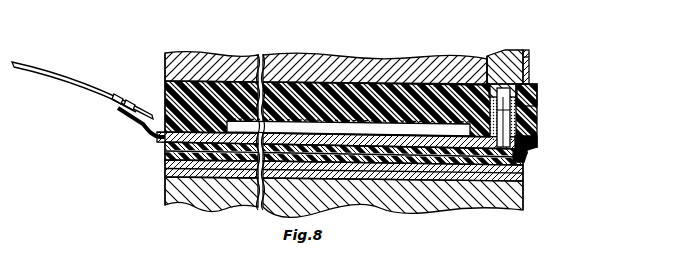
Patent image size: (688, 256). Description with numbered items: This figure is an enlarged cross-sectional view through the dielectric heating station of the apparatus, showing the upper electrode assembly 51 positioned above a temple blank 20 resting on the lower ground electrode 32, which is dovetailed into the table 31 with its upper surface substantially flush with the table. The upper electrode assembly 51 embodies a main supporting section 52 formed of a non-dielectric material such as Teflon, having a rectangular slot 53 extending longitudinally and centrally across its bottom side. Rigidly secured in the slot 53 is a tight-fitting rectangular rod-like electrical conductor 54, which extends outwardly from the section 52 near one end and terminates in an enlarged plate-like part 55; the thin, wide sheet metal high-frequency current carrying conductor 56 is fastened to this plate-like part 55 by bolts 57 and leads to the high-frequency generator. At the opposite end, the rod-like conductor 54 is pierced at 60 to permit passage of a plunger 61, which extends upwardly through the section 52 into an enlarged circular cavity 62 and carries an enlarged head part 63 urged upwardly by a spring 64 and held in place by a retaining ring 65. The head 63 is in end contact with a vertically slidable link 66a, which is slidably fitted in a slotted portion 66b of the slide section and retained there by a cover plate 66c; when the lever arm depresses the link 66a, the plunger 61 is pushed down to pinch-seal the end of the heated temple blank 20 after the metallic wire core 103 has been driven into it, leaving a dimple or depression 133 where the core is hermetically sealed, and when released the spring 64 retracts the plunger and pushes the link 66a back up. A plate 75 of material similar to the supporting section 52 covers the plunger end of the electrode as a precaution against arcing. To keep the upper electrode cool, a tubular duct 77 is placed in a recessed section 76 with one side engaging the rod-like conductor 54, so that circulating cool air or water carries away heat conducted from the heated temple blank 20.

The upper electrode assembly 51 is at (183, 48).
The main supporting section 52 is at (287, 85).
The rectangular slot 53 is at (208, 100).
The rod-like electrical conductor 54 is at (165, 86).
The plate-like part 55 is at (118, 110).
The high-frequency electrical current carrying conductor 56 is at (78, 84).
The bolts 57 is at (118, 97).
The temple blank 20 is at (158, 153).
The electrode 32 is at (158, 169).
The table 31 is at (174, 200).
The tubular duct 77 is at (378, 88).
The recessed section 76 is at (425, 121).
The metallic wire core 103 is at (405, 150).
The dimple or depression 133 is at (524, 160).
The pierced opening 60 is at (527, 156).
The plunger 61 is at (537, 122).
The enlarged circular cavity 62 is at (478, 105).
The enlarged head part 63 is at (537, 100).
The spring 64 is at (537, 138).
The retaining ring 65 is at (529, 75).
The vertically slidable link 66a is at (530, 57).
The slotted portion 66b is at (487, 62).
The cover plate 66c is at (529, 52).
The plate 75 is at (527, 150).